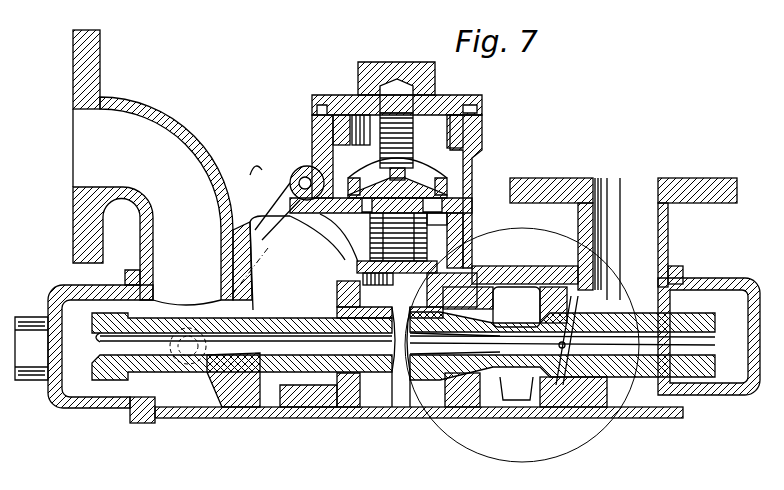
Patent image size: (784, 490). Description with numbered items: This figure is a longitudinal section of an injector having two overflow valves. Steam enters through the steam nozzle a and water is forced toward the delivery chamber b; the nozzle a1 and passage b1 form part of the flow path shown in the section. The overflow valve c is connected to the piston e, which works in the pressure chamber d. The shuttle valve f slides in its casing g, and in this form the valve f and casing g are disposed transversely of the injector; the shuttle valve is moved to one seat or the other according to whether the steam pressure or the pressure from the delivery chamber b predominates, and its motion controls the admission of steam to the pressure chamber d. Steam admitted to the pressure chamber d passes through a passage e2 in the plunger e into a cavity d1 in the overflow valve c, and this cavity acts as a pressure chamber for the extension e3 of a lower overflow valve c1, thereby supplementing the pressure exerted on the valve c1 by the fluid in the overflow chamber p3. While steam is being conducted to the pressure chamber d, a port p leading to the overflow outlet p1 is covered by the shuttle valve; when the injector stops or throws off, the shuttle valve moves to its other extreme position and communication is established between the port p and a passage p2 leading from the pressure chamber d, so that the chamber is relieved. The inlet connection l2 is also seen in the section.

The steam nozzle a is at (562, 340).
The nozzle a1 is at (468, 342).
The delivery chamber b is at (349, 346).
The inlet passage b1 is at (164, 167).
The overflow valve c is at (380, 290).
The lower overflow valve c1 is at (364, 300).
The pressure chamber d is at (398, 90).
The cavity d1 is at (360, 276).
The piston e is at (413, 168).
The passage e2 is at (445, 240).
The extension e3 is at (429, 296).
The shuttle valve f is at (296, 176).
The casing g is at (298, 184).
The inlet pipe l2 is at (265, 170).
The port p is at (330, 207).
The overflow outlet p1 is at (338, 242).
The passage p2 is at (311, 123).
The overflow chamber p3 is at (259, 263).